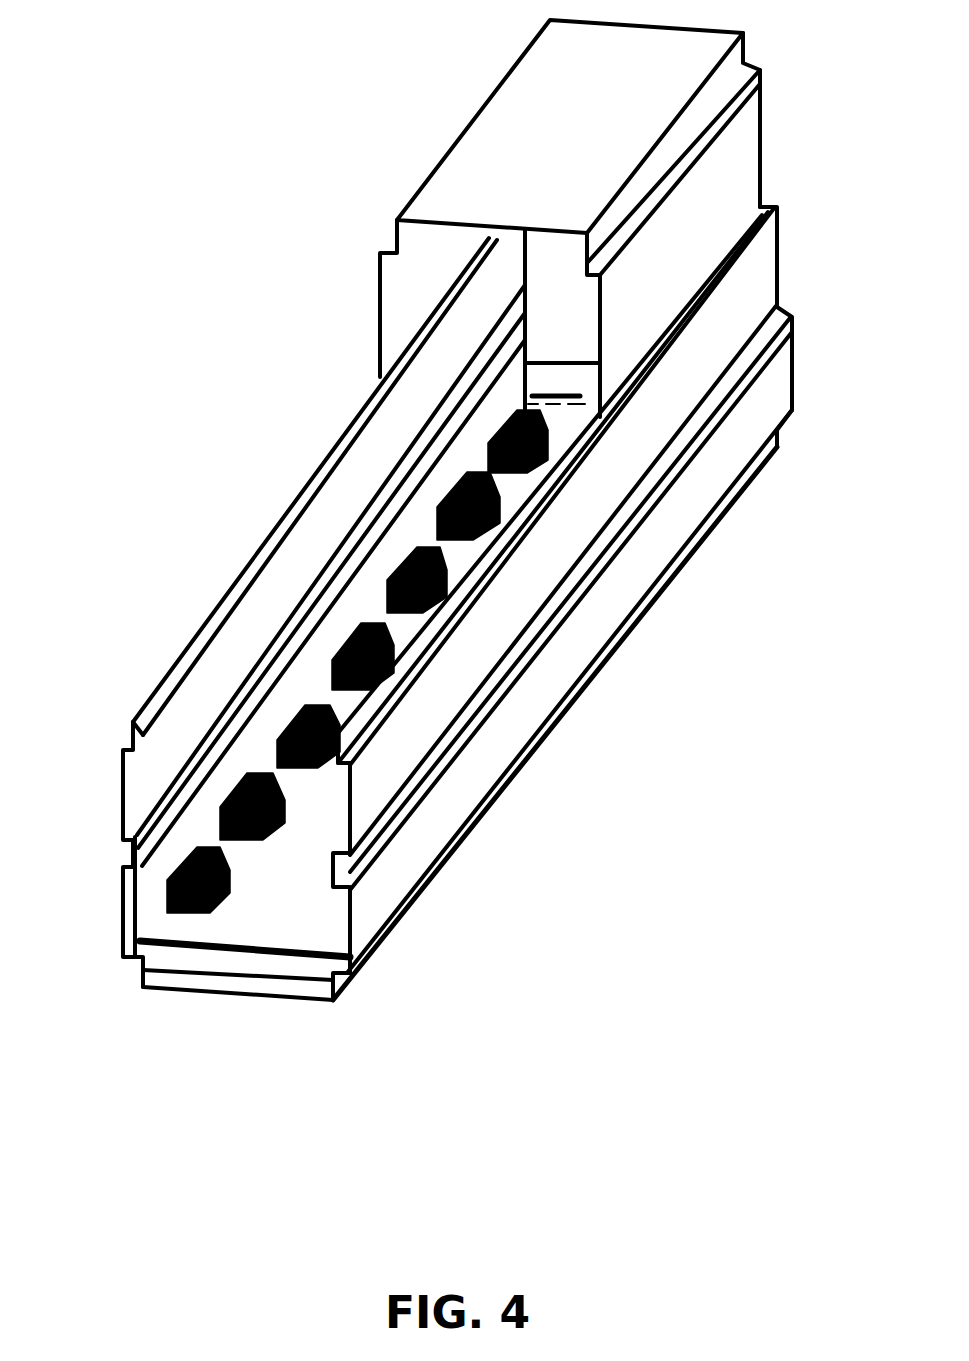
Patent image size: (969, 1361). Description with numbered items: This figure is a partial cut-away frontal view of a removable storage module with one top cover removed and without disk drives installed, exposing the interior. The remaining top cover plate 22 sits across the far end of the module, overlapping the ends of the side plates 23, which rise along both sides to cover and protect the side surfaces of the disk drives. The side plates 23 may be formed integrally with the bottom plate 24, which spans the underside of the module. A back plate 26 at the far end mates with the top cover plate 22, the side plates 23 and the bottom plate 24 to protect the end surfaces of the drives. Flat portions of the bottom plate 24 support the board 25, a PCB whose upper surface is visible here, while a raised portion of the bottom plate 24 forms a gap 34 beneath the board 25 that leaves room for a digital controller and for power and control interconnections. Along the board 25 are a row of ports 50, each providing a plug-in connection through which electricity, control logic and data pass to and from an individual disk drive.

The top cover plate 22 is at (478, 110).
The side plate 23 is at (760, 287).
The bottom plate 24 is at (267, 997).
The board 25 is at (217, 953).
The back plate 26 is at (568, 332).
The gap 34 is at (157, 953).
The port 50 is at (163, 913).